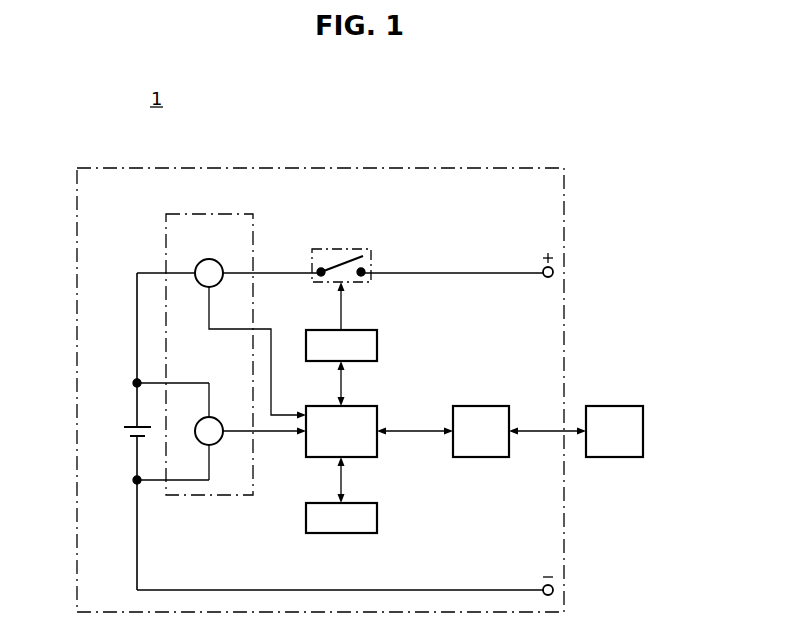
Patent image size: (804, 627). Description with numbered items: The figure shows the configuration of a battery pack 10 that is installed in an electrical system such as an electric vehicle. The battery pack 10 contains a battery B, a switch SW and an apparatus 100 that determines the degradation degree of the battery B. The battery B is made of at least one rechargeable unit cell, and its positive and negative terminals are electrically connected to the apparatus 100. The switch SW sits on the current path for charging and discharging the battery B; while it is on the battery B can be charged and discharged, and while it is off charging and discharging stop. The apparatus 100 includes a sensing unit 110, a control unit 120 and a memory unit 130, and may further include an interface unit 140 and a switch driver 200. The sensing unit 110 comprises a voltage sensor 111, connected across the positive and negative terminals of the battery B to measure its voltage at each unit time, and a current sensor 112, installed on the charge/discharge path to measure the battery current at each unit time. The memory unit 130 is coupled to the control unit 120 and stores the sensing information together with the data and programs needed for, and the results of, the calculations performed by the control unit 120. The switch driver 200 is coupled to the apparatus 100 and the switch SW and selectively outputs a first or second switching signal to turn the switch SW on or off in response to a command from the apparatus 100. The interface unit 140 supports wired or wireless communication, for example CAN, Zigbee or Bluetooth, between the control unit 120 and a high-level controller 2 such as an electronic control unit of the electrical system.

The high-level controller 2 is at (622, 406).
The battery pack 10 is at (505, 168).
The apparatus 100 is at (390, 324).
The sensing unit 110 is at (232, 215).
The voltage sensor 111 is at (219, 420).
The current sensor 112 is at (209, 258).
The control unit 120 is at (378, 414).
The memory unit 130 is at (378, 518).
The interface unit 140 is at (489, 406).
The switch driver 200 is at (378, 345).
The battery B is at (118, 427).
The switch SW is at (341, 249).